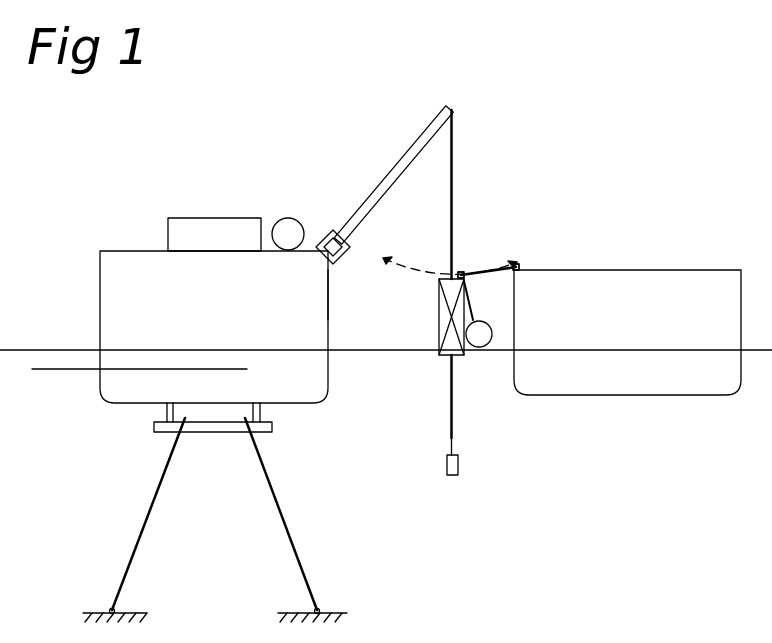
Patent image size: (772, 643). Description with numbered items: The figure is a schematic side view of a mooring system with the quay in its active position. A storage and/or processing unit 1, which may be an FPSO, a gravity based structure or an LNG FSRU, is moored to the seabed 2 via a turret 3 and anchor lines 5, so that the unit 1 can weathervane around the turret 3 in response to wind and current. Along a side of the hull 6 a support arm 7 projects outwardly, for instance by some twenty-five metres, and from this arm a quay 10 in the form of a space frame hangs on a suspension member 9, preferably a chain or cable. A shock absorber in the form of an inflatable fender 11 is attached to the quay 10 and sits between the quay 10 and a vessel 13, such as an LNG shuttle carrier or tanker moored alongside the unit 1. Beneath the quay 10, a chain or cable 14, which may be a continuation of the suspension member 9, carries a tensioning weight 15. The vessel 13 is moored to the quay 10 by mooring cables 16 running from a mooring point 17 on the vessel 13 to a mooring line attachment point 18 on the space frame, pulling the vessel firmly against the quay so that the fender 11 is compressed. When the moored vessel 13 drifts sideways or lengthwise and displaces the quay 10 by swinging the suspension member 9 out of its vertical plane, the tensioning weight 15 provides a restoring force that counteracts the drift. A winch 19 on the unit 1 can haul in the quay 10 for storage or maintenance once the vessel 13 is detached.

The storage and/or processing unit 1 is at (138, 272).
The seabed 2 is at (97, 610).
The turret 3 is at (217, 230).
The anchor lines 5 is at (152, 498).
The hull 6 is at (312, 295).
The support arm 7 is at (408, 152).
The suspension member 9 is at (453, 158).
The quay 10 is at (438, 320).
The inflatable fender 11 is at (479, 340).
The vessel 13 is at (643, 288).
The chain or cable 14 is at (452, 403).
The tensioning weight 15 is at (455, 465).
The mooring cables 16 is at (506, 272).
The mooring point 17 is at (522, 268).
The mooring line attachment point 18 is at (458, 273).
The winch 19 is at (290, 230).